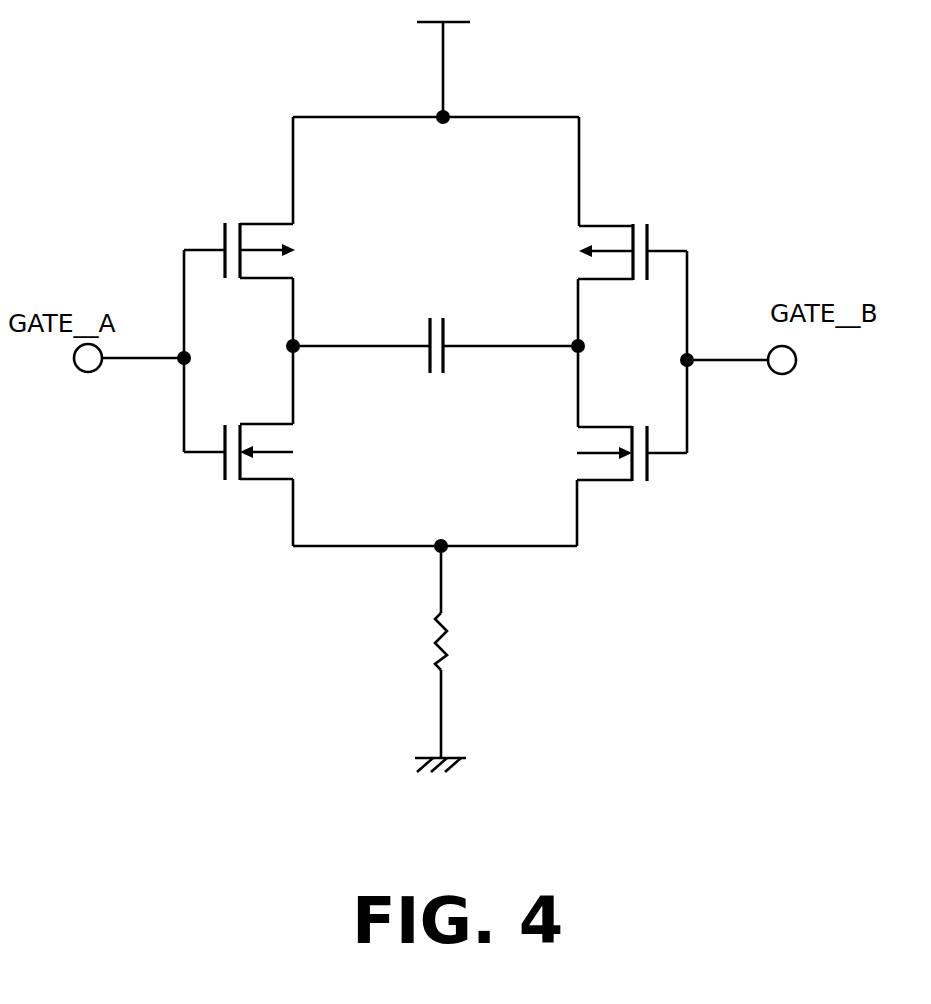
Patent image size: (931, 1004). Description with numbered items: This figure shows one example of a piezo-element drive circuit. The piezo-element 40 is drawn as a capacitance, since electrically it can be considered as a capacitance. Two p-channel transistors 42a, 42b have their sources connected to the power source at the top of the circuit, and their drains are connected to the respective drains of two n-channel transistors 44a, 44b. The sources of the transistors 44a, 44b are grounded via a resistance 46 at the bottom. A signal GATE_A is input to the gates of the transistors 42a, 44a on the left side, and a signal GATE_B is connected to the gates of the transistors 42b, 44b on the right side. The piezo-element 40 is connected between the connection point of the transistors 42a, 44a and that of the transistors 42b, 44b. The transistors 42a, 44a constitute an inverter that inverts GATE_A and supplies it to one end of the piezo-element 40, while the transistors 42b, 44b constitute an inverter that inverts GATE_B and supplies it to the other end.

The piezo-element 40 is at (441, 320).
The p-channel transistor 42a is at (239, 225).
The p-channel transistor 42b is at (632, 228).
The n-channel transistor 44a is at (238, 427).
The n-channel transistor 44b is at (632, 436).
The resistance 46 is at (465, 659).